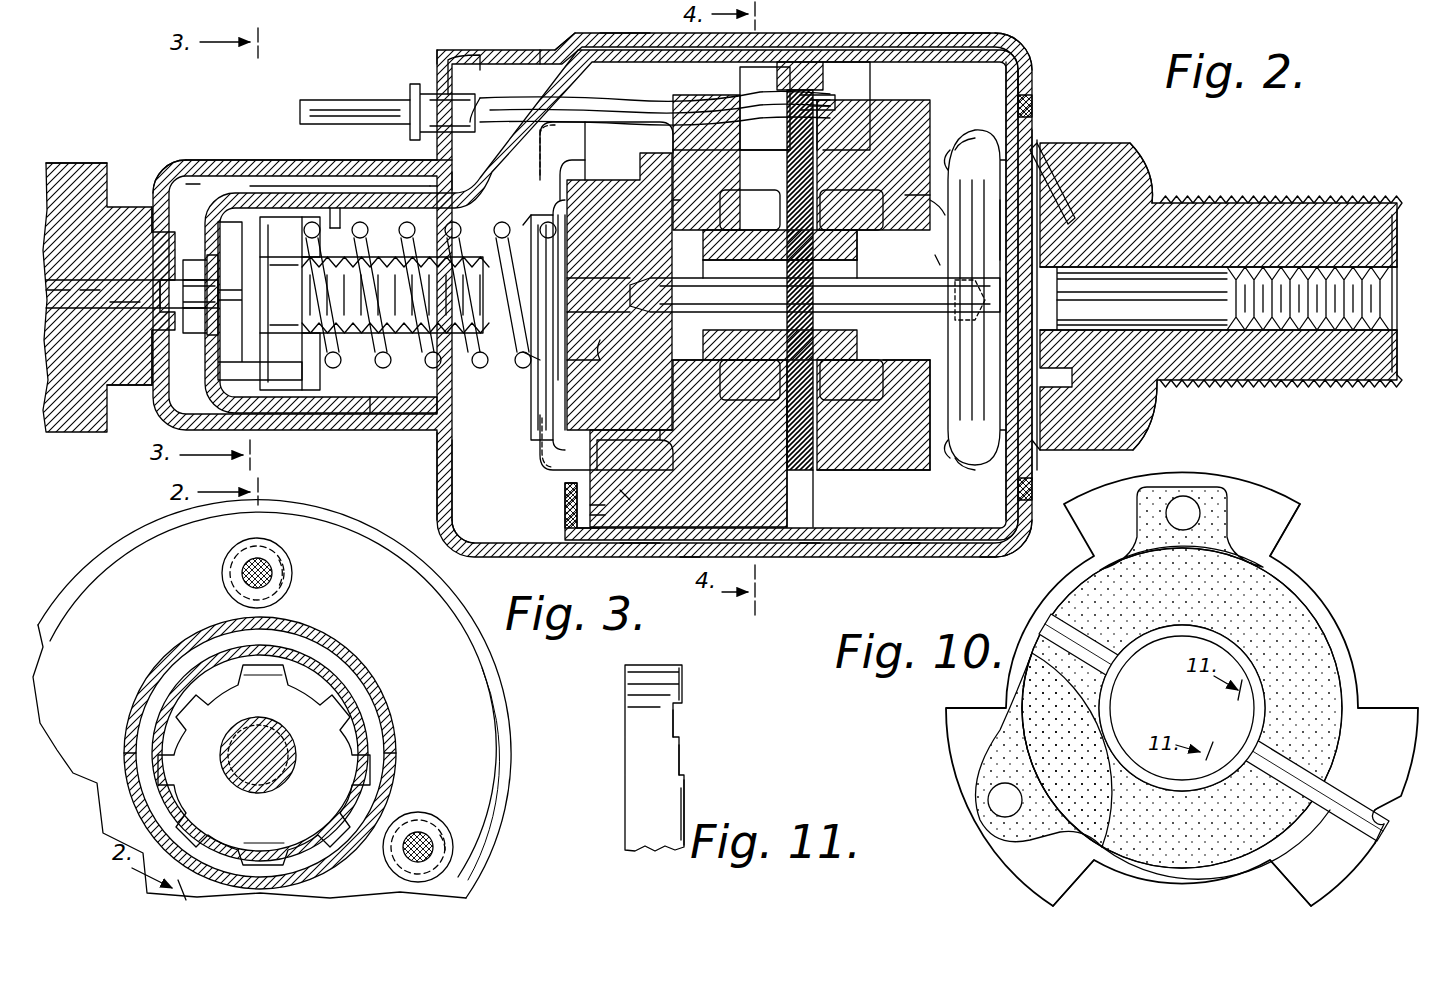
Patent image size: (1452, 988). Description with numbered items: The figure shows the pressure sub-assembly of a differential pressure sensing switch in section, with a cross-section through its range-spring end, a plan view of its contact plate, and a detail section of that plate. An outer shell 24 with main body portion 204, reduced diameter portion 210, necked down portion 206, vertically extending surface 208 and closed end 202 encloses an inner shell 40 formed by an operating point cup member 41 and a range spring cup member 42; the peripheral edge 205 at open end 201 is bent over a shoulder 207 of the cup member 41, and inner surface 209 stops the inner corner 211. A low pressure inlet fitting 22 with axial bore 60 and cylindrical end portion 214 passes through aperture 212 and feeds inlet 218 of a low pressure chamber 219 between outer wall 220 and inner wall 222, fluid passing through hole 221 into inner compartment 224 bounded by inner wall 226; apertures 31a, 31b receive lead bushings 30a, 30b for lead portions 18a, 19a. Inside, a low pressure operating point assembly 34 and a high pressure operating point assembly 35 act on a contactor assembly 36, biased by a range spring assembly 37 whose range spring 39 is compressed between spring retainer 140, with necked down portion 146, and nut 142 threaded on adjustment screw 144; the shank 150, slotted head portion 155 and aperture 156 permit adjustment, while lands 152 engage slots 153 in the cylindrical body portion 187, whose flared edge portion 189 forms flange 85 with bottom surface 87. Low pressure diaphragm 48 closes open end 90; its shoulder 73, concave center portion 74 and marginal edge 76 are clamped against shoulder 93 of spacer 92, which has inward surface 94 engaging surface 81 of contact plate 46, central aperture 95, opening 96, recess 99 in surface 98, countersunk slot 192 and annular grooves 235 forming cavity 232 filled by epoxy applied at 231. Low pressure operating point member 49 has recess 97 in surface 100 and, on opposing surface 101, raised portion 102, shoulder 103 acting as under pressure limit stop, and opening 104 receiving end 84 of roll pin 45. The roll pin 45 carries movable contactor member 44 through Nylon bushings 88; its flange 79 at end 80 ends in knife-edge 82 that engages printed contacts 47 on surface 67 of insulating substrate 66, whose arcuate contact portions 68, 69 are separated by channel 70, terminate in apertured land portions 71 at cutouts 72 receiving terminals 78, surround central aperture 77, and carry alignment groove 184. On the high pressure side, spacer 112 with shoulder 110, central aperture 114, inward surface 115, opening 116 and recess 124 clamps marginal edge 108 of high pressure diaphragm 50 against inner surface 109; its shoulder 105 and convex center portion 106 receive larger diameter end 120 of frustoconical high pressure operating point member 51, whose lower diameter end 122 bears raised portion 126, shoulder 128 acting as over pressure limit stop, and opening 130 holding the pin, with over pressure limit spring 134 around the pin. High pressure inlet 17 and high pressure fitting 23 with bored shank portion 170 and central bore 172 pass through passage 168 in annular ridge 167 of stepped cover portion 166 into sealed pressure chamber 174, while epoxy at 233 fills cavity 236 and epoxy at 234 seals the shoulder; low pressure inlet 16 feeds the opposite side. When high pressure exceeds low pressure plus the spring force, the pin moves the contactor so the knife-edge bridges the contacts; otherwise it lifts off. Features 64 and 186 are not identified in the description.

In FIG. 2, the vehicle frame member 16 is at (49, 143).
In FIG. 2, the threaded output stud 17 is at (1410, 205).
In FIG. 3, the mounting bolt 18a is at (405, 860).
In FIG. 2, the hydraulic fluid tube 19a is at (362, 92).
In FIG. 3, the hydraulic fluid tube 19a is at (244, 578).
In FIG. 2, the mounting wall 22 is at (85, 163).
In FIG. 2, the threaded portion 23 is at (1242, 210).
In FIG. 2, the housing 24 is at (870, 552).
In FIG. 3, the boss 30a is at (425, 840).
In FIG. 2, the boss 30b is at (425, 78).
In FIG. 3, the boss 30b is at (274, 570).
In FIG. 3, the bolt hole 31a is at (450, 840).
In FIG. 2, the bolt hole 31b is at (468, 62).
In FIG. 3, the bolt hole 31b is at (286, 585).
In FIG. 2, the plate 34 is at (528, 378).
In FIG. 2, the groove 35 is at (978, 453).
In FIG. 2, the bolt head 36 is at (850, 75).
In FIG. 2, the threaded adjusting rod 37 is at (322, 400).
In FIG. 2, the coil spring 39 is at (430, 301).
In FIG. 2, the wall 40 is at (478, 482).
In FIG. 2, the wall portion 41 is at (640, 545).
In FIG. 2, the sleeve 42 is at (478, 452).
In FIG. 3, the sleeve 42 is at (372, 672).
In FIG. 2, the recess 44 is at (750, 380).
In FIG. 2, the output shaft 45 is at (850, 304).
In FIG. 10, the output shaft 45 is at (1175, 908).
In FIG. 2, the bore 46 is at (768, 150).
In FIG. 2, the friction lining 47 is at (815, 147).
In FIG. 10, the friction lining 47 is at (1300, 617).
In FIG. 2, the flange 48 is at (470, 165).
In FIG. 2, the passage 49 is at (617, 151).
In FIG. 2, the lip 50 is at (962, 145).
In FIG. 2, the body 51 is at (930, 190).
In FIG. 2, the input rod 60 is at (104, 305).
In FIG. 11, the rim 64 is at (686, 800).
In FIG. 11, the friction disc 66 is at (665, 668).
In FIG. 10, the friction disc 66 is at (1298, 492).
In FIG. 11, the shoulder 67 is at (684, 772).
In FIG. 10, the shoulder 67 is at (1378, 700).
In FIG. 2, the face 68 is at (818, 135).
In FIG. 11, the face 68 is at (690, 681).
In FIG. 10, the face 68 is at (1290, 640).
In FIG. 10, the lining segment 69 is at (1240, 850).
In FIG. 11, the rib 70 is at (680, 737).
In FIG. 10, the rib 70 is at (1345, 790).
In FIG. 10, the notch 71 is at (1278, 524).
In FIG. 10, the slot 72 is at (1318, 578).
In FIG. 2, the cup 73 is at (522, 212).
In FIG. 2, the flange 74 is at (548, 400).
In FIG. 2, the recess 76 is at (650, 448).
In FIG. 2, the hub 77 is at (780, 278).
In FIG. 10, the hub 77 is at (1165, 702).
In FIG. 2, the bolt 78 is at (818, 75).
In FIG. 2, the recess 79 is at (851, 210).
In FIG. 2, the shoulder 80 is at (865, 236).
In FIG. 2, the bore 81 is at (782, 428).
In FIG. 2, the nut 82 is at (780, 244).
In FIG. 2, the face 84 is at (624, 347).
In FIG. 2, the diaphragm 85 is at (1000, 340).
In FIG. 2, the end wall 87 is at (596, 545).
In FIG. 2, the shaft portion 88 is at (725, 278).
In FIG. 2, the corner 90 is at (525, 540).
In FIG. 2, the wall 92 is at (690, 545).
In FIG. 2, the passage 93 is at (635, 455).
In FIG. 2, the wall 94 is at (805, 545).
In FIG. 2, the face 95 is at (700, 365).
In FIG. 2, the recess 96 is at (752, 217).
In FIG. 2, the piston 97 is at (595, 172).
In FIG. 2, the seal 98 is at (575, 468).
In FIG. 2, the seal 99 is at (585, 138).
In FIG. 2, the flange 100 is at (454, 157).
In FIG. 2, the body 101 is at (706, 162).
In FIG. 2, the bore 102 is at (678, 215).
In FIG. 2, the body 103 is at (688, 443).
In FIG. 2, the face 104 is at (612, 360).
In FIG. 2, the lip 105 is at (981, 156).
In FIG. 2, the wall 106 is at (1006, 230).
In FIG. 2, the seal 108 is at (1025, 487).
In FIG. 2, the flange 109 is at (1040, 455).
In FIG. 2, the wall 110 is at (990, 548).
In FIG. 2, the wall 112 is at (905, 525).
In FIG. 2, the shoulder 114 is at (920, 371).
In FIG. 2, the bore 115 is at (810, 497).
In FIG. 2, the recess 116 is at (851, 380).
In FIG. 2, the lip 120 is at (960, 440).
In FIG. 2, the body 122 is at (930, 415).
In FIG. 2, the face 124 is at (925, 462).
In FIG. 2, the groove 126 is at (960, 254).
In FIG. 2, the flange 128 is at (950, 212).
In FIG. 2, the key 130 is at (972, 290).
In FIG. 2, the face 134 is at (909, 184).
In FIG. 2, the piston body 140 is at (605, 263).
In FIG. 2, the plate 142 is at (268, 392).
In FIG. 3, the plate 142 is at (195, 755).
In FIG. 2, the nut 144 is at (332, 397).
In FIG. 2, the diaphragm 146 is at (548, 268).
In FIG. 2, the shaft end 150 is at (490, 366).
In FIG. 3, the shaft end 150 is at (255, 738).
In FIG. 2, the cam plate 152 is at (240, 385).
In FIG. 3, the cam plate 152 is at (360, 760).
In FIG. 2, the ring 153 is at (378, 412).
In FIG. 3, the ring 153 is at (395, 735).
In FIG. 2, the flange 155 is at (163, 400).
In FIG. 2, the bracket 156 is at (195, 262).
In FIG. 2, the nut 166 is at (1045, 140).
In FIG. 2, the rounded edge 167 is at (1130, 160).
In FIG. 2, the retaining ring 168 is at (1133, 198).
In FIG. 2, the bore 170 is at (1072, 338).
In FIG. 2, the internal thread 172 is at (1322, 368).
In FIG. 2, the rounded edge 174 is at (1100, 395).
In FIG. 10, the tab 184 is at (1387, 835).
In FIG. 10, the notch 186 is at (1364, 866).
In FIG. 2, the liner 187 is at (285, 192).
In FIG. 2, the gap 189 is at (418, 182).
In FIG. 2, the bore 192 is at (760, 75).
In FIG. 2, the end wall 201 is at (1040, 130).
In FIG. 2, the cover 202 is at (213, 157).
In FIG. 2, the top wall 204 is at (629, 16).
In FIG. 2, the corner 205 is at (1042, 75).
In FIG. 2, the housing shell 206 is at (192, 163).
In FIG. 2, the corner 207 is at (1028, 62).
In FIG. 2, the wall 208 is at (443, 32).
In FIG. 2, the tube bend 209 is at (495, 93).
In FIG. 2, the wall 210 is at (540, 45).
In FIG. 2, the step 211 is at (583, 42).
In FIG. 2, the flange 212 is at (152, 200).
In FIG. 2, the flange 214 is at (129, 394).
In FIG. 2, the gap 218 is at (232, 190).
In FIG. 2, the rib 219 is at (380, 188).
In FIG. 2, the gap 220 is at (340, 185).
In FIG. 2, the rib 221 is at (343, 200).
In FIG. 2, the wall 222 is at (248, 175).
In FIG. 2, the diaphragm 224 is at (543, 314).
In FIG. 2, the diaphragm edge 226 is at (511, 215).
In FIG. 2, the seal 231 is at (565, 502).
In FIG. 2, the lip 232 is at (612, 520).
In FIG. 2, the wall 233 is at (925, 45).
In FIG. 2, the seal 234 is at (1045, 100).
In FIG. 2, the lip 235 is at (642, 491).
In FIG. 2, the corner 236 is at (1020, 530).